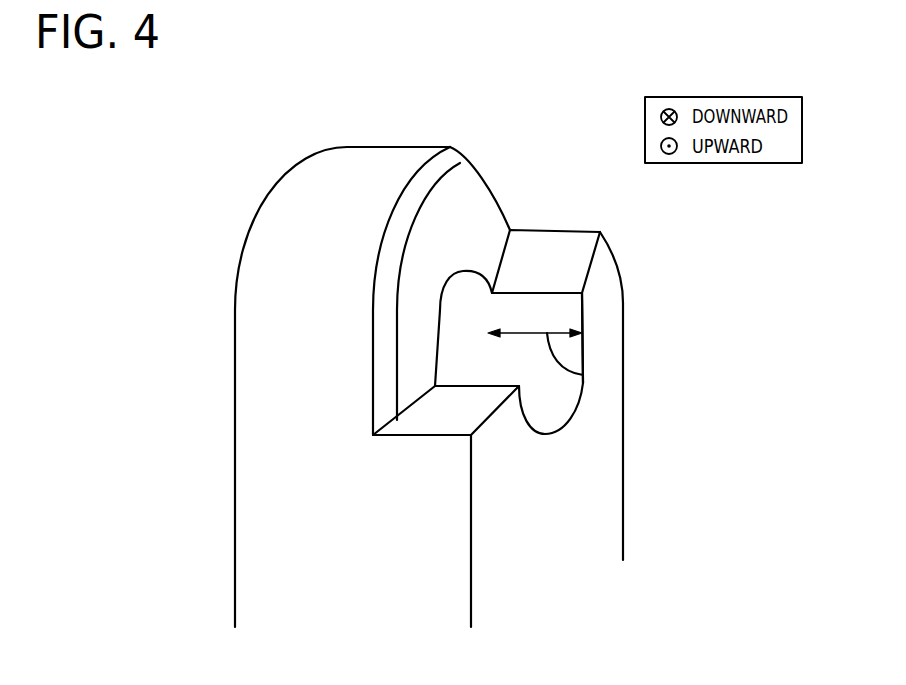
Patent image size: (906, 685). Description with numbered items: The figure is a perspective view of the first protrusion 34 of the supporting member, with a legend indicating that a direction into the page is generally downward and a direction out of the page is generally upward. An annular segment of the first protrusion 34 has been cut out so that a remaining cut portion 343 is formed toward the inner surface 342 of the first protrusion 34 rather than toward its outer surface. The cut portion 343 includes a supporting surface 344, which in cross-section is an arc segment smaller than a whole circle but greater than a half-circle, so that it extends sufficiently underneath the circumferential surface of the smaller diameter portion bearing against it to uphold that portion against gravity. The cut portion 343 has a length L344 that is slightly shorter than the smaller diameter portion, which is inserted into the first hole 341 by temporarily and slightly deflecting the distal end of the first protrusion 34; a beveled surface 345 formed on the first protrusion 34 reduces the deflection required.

The first protrusion 34 is at (272, 505).
The first hole 341 is at (480, 363).
The inner surface 342 is at (605, 328).
The cut portion 343 is at (523, 224).
The supporting surface 344 is at (547, 310).
The beveled surface 345 is at (407, 212).
The length of the cut portion L344 is at (583, 375).